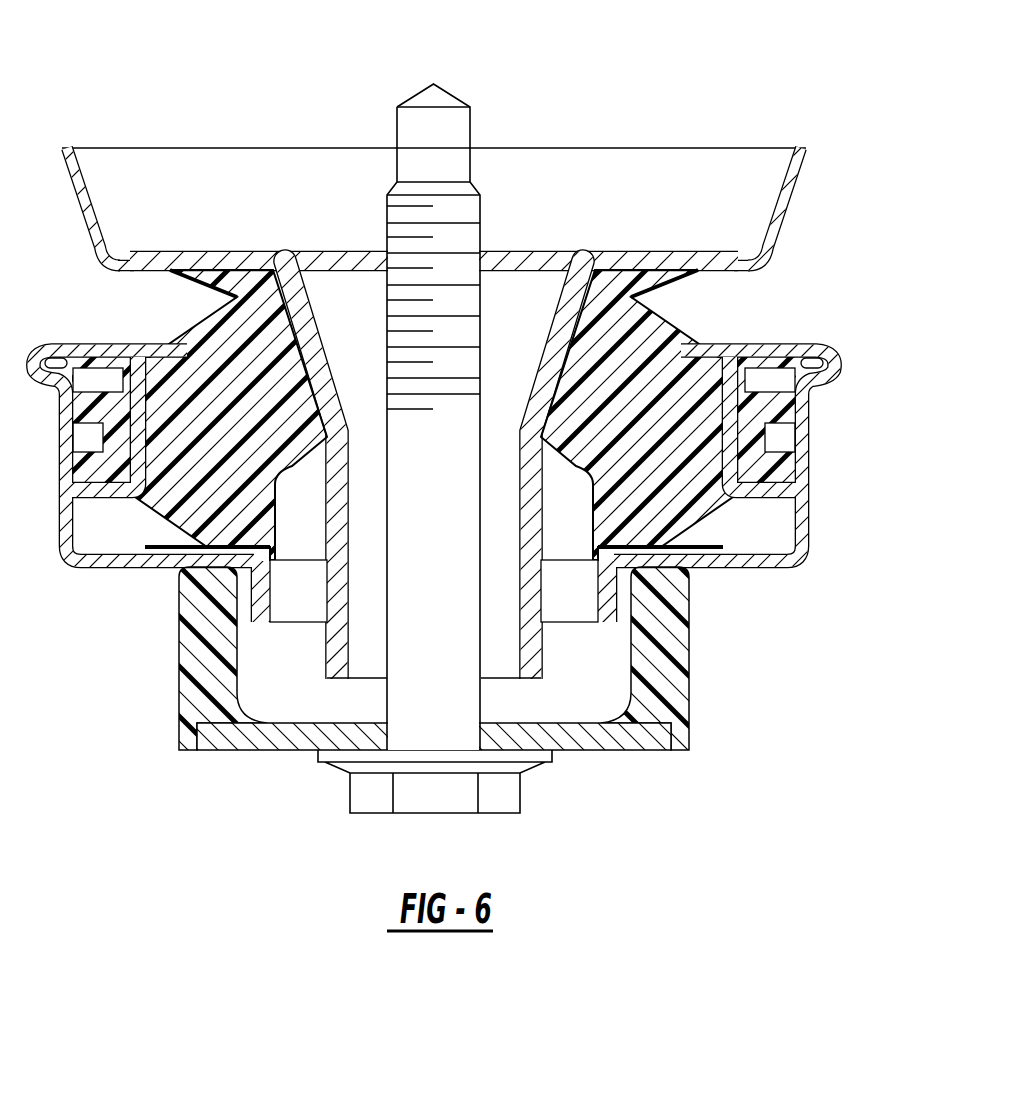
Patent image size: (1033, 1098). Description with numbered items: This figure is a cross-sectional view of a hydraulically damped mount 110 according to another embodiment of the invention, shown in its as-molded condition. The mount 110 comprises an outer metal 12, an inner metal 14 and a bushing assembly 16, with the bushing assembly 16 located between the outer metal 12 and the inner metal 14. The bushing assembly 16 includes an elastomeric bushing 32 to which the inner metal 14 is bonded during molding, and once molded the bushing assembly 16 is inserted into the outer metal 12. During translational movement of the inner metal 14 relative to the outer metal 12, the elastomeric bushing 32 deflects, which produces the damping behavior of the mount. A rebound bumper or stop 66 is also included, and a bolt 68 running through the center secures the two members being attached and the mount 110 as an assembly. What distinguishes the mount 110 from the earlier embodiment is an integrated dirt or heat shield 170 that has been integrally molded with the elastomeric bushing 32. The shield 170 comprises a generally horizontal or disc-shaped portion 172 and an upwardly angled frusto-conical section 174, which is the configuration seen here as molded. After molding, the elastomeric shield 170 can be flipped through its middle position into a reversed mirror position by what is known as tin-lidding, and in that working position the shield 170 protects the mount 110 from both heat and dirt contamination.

The hydraulically damped mount 110 is at (516, 411).
The integrated dirt or heat shield 170 is at (85, 175).
The generally horizontal or disc shaped portion 172 is at (125, 265).
The upwardly angled frusto-conical section 174 is at (794, 187).
The bolt 68 is at (446, 127).
The bushing assembly 16 is at (217, 343).
The elastomeric bushing 32 is at (673, 337).
The outer metal 12 is at (787, 553).
The inner metal 14 is at (338, 590).
The rebound bumper or stop 66 is at (160, 690).